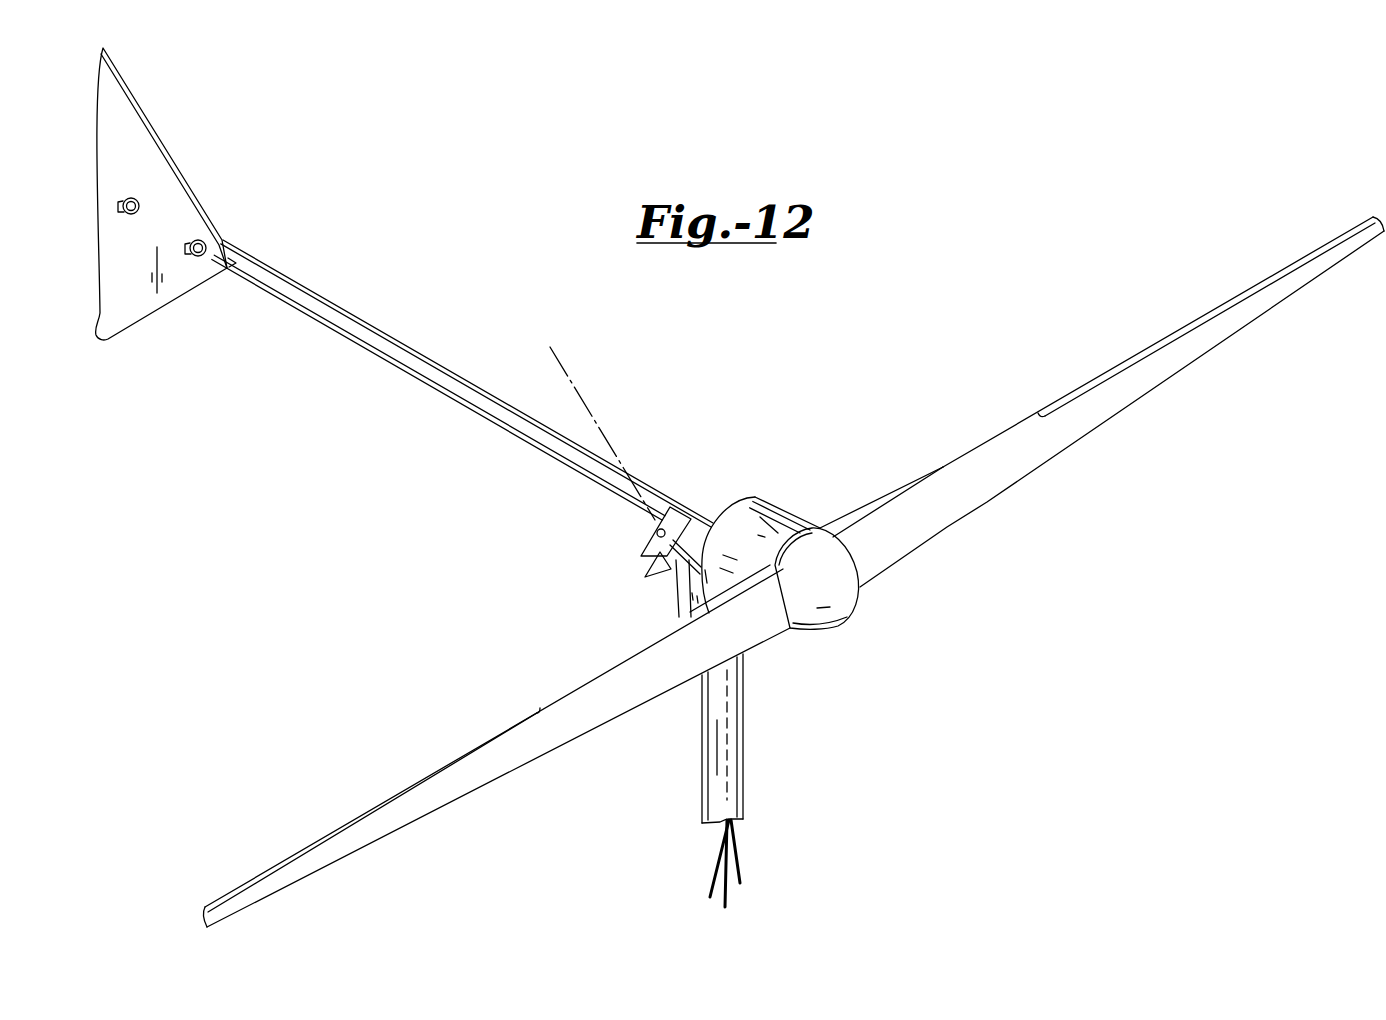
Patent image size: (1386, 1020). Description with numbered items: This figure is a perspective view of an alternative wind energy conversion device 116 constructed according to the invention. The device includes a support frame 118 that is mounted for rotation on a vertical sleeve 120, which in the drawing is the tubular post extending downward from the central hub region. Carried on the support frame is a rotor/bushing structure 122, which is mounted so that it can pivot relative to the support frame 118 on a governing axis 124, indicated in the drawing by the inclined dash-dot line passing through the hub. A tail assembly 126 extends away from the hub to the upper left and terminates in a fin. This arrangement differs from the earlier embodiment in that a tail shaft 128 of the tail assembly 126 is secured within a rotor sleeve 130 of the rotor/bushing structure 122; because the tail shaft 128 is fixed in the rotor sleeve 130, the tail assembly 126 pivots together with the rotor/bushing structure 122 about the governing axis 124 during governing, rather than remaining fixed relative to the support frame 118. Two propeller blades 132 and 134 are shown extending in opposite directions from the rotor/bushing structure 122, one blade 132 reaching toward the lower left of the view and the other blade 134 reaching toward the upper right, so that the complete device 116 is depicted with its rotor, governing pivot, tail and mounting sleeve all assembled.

The wind energy conversion device 116 is at (790, 503).
The support frame 118 is at (687, 600).
The vertical sleeve 120 is at (743, 733).
The rotor/bushing structure 122 is at (868, 633).
The governing axis 124 is at (558, 355).
The tail assembly 126 is at (404, 287).
The tail shaft 128 is at (398, 370).
The rotor sleeve 130 is at (703, 517).
The propeller blade 132 is at (567, 693).
The propeller blade 134 is at (1017, 420).